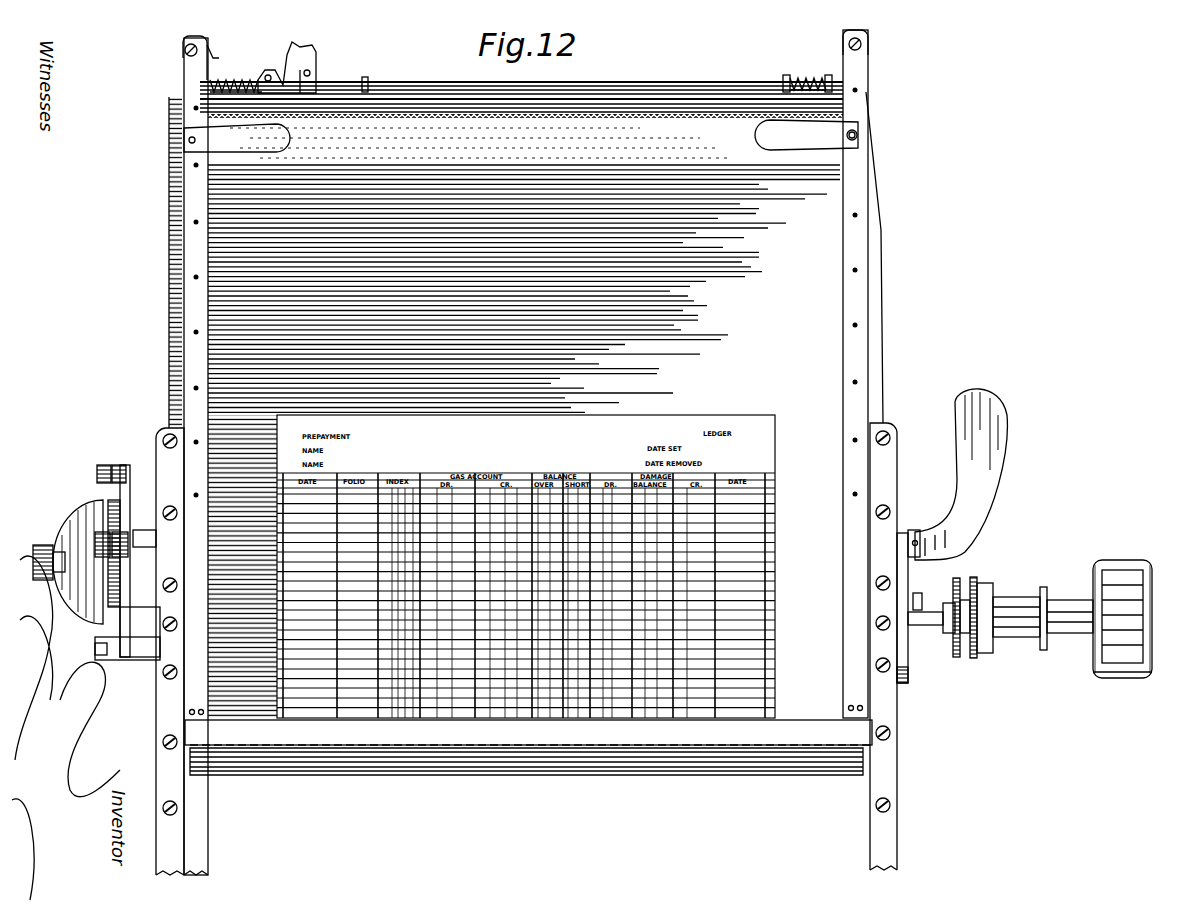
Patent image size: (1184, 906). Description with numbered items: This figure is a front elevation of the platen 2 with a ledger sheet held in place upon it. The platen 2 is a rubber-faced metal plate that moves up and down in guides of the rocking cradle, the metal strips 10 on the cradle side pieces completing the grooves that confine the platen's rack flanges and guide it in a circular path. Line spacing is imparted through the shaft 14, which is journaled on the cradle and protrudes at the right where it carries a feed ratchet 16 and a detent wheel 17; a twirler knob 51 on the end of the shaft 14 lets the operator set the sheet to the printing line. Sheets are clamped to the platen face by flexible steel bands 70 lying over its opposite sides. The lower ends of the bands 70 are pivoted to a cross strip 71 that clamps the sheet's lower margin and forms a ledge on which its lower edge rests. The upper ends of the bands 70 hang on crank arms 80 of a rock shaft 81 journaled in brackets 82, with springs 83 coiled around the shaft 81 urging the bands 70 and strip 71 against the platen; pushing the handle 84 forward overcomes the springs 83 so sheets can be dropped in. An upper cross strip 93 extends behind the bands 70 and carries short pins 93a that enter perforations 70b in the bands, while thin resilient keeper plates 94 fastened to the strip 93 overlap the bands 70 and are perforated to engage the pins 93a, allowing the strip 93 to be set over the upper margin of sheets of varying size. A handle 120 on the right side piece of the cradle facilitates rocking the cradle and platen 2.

The platen 2 is at (504, 407).
The metal strips 10 is at (160, 762).
The shaft 14 is at (930, 630).
The feed ratchet 16 is at (960, 578).
The detent wheel 17 is at (974, 658).
The twirler knob 51 is at (1115, 565).
The flexible steel bands 70 is at (184, 295).
The perforations 70b is at (880, 356).
The cross strip 71 is at (812, 735).
The crank arms 80 is at (190, 62).
The rock shaft 81 is at (612, 88).
The brackets 82 is at (368, 80).
The springs 83 is at (236, 80).
The handle 84 is at (318, 55).
The upper cross strip 93 is at (645, 120).
The short pins 93a is at (870, 135).
The keeper plates 94 is at (186, 150).
The handle 120 is at (992, 420).